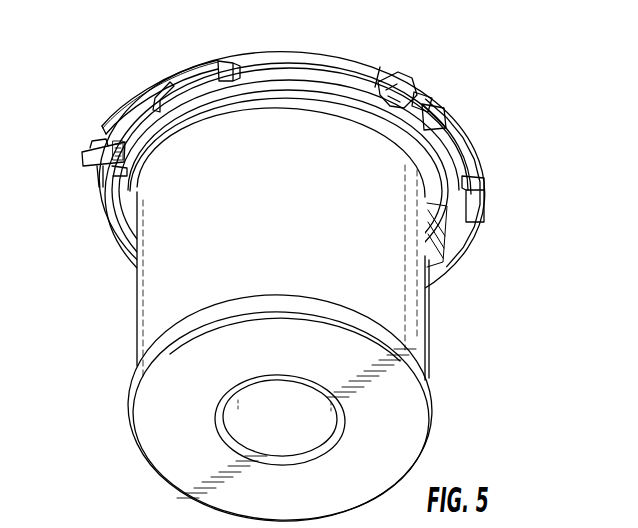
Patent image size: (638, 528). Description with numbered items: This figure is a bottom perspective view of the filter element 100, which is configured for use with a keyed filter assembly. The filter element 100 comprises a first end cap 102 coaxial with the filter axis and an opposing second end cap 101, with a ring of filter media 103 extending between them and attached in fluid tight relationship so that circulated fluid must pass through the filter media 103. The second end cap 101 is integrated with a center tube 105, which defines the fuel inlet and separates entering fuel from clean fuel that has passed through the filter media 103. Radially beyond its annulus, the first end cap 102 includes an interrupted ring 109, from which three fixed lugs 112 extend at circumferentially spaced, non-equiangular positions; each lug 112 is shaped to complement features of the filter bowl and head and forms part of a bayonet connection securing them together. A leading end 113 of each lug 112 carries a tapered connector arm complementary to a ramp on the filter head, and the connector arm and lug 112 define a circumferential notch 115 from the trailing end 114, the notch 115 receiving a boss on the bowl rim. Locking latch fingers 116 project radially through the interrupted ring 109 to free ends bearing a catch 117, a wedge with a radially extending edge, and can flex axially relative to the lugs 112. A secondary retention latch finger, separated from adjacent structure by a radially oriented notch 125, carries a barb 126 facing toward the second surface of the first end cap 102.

The filter element 100 is at (303, 269).
The second end cap 101 is at (398, 443).
The first end cap 102 is at (265, 52).
The filter media 103 is at (290, 217).
The center tube 105 is at (304, 432).
The interrupted ring 109 is at (329, 80).
The fixed lug 112 is at (482, 168).
The leading end 113 is at (218, 62).
The trailing end 114 is at (102, 128).
The circumferential notch 115 is at (162, 97).
The locking latch finger 116 is at (83, 151).
The catch 117 is at (392, 70).
The radially oriented notch 125 is at (432, 95).
The barb 126 is at (442, 111).